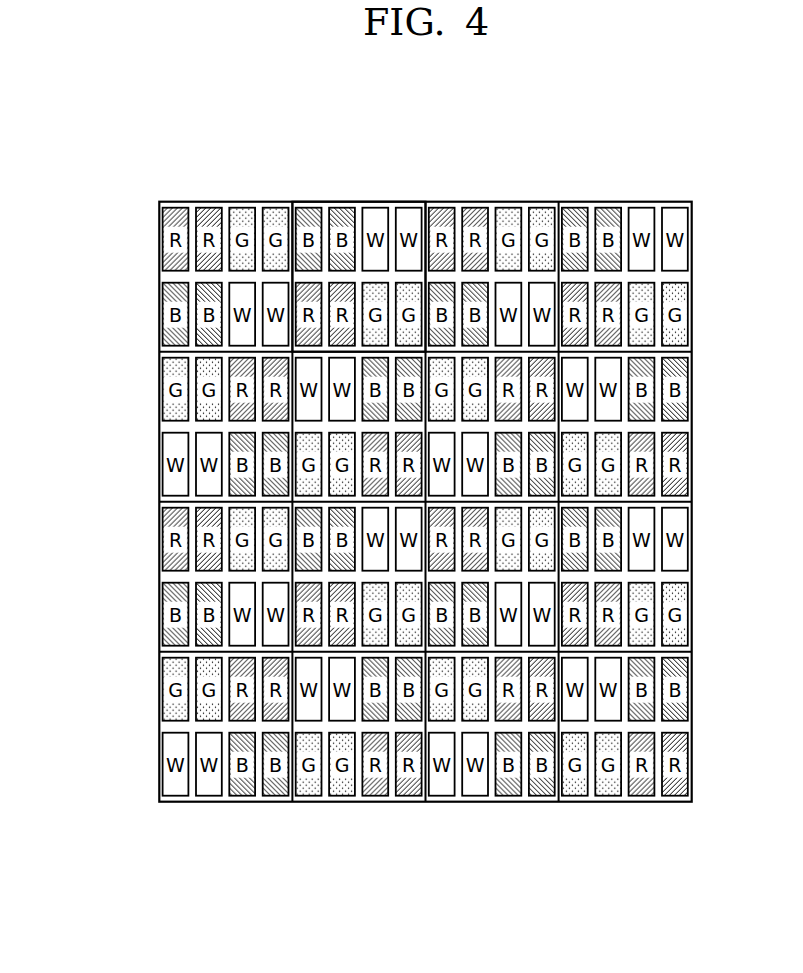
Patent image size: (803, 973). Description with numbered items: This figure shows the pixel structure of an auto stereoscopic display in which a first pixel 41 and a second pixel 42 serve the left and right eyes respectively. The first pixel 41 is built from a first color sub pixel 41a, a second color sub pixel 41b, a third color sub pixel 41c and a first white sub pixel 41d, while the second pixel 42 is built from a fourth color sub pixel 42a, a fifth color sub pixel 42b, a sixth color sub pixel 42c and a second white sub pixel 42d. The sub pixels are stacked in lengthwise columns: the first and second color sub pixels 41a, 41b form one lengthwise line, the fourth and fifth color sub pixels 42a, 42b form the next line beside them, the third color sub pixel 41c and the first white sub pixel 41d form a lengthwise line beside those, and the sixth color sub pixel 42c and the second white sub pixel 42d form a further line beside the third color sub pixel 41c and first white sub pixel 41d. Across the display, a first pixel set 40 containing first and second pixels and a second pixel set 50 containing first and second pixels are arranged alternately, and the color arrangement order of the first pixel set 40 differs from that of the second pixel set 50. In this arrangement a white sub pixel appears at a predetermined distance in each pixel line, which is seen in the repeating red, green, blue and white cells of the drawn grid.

The first pixel set 40 is at (155, 191).
The first pixel 41 is at (63, 197).
The first color sub pixel 41a is at (162, 238).
The second color sub pixel 41b is at (162, 313).
The third color sub pixel 41c is at (229, 225).
The first white sub pixel 41d is at (229, 300).
The second pixel 42 is at (433, 158).
The fourth color sub pixel 42a is at (222, 257).
The fifth color sub pixel 42b is at (220, 330).
The sixth color sub pixel 42c is at (288, 255).
The second white sub pixel 42d is at (290, 328).
The second pixel set 50 is at (432, 217).